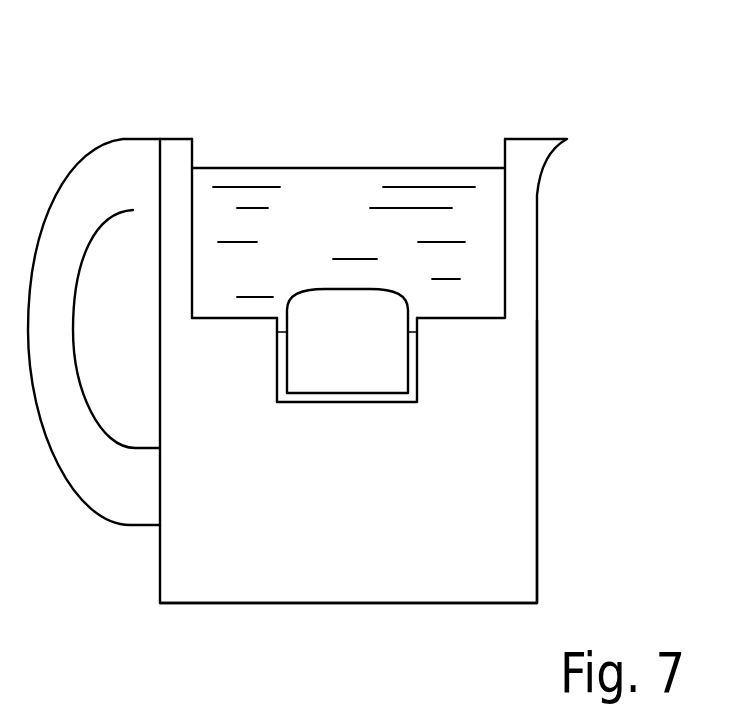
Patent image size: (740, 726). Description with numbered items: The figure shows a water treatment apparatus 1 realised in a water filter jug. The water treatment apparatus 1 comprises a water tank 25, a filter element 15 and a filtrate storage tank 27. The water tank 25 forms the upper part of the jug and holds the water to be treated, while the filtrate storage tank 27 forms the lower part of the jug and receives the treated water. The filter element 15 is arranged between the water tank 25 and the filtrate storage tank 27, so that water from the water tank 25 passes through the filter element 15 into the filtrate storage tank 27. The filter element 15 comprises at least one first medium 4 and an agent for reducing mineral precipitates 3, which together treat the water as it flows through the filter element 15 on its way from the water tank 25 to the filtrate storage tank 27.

The water treatment apparatus 1 is at (470, 108).
The water tank 25 is at (316, 140).
The filter element 15 is at (311, 282).
The filtrate storage tank 27 is at (490, 393).
The first medium 4 is at (322, 365).
The agent for reducing mineral precipitates 3 is at (377, 355).